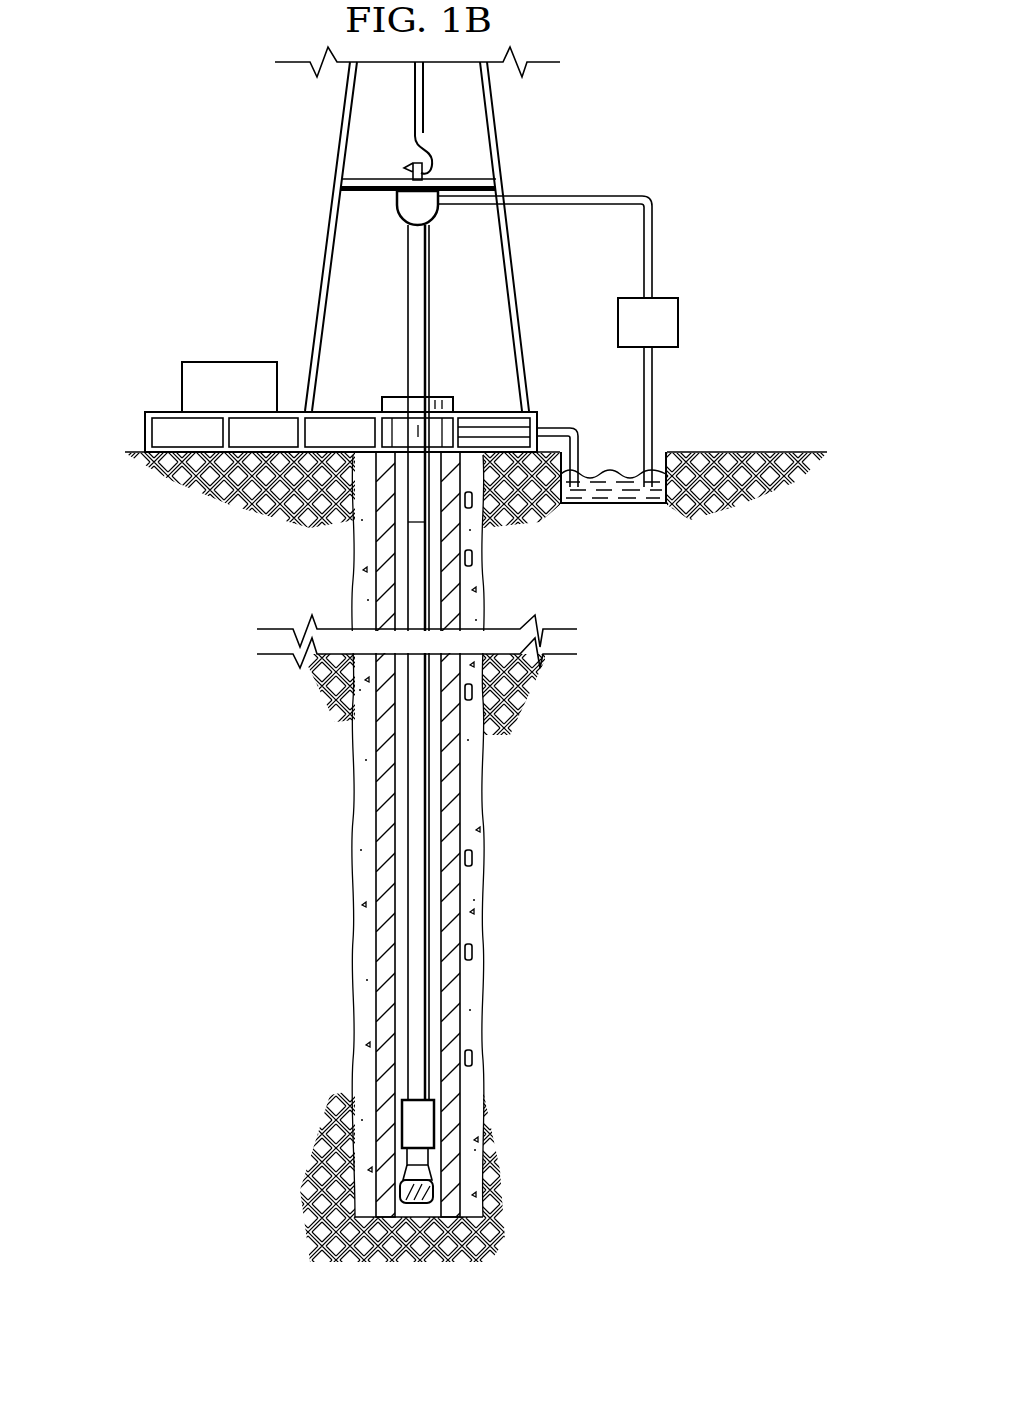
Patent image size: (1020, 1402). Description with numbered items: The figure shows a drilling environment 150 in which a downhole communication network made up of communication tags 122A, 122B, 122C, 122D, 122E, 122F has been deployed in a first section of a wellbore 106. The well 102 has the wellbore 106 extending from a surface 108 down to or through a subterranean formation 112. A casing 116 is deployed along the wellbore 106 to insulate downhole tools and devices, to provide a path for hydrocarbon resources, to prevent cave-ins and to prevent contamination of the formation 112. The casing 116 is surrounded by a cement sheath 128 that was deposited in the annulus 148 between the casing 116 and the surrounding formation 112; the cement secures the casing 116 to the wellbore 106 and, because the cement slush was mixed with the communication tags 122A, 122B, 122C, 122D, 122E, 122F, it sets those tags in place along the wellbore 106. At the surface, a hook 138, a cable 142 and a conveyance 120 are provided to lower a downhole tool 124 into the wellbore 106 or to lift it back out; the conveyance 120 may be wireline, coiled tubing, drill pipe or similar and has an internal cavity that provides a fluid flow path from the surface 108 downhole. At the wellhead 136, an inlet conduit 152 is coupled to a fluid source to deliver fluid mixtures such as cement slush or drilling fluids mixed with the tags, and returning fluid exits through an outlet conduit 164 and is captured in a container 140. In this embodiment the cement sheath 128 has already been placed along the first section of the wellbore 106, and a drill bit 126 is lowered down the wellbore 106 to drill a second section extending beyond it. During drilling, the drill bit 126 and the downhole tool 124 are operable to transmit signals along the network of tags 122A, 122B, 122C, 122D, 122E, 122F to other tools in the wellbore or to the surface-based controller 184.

The well 102 is at (444, 386).
The wellbore 106 is at (476, 812).
The surface 108 is at (762, 452).
The subterranean formation 112 is at (688, 751).
The casing 116 is at (452, 895).
The conveyance 120 is at (408, 815).
The communication tag 122A is at (474, 1058).
The communication tag 122B is at (474, 952).
The communication tag 122C is at (474, 858).
The communication tag 122D is at (473, 692).
The communication tag 122E is at (473, 558).
The communication tag 122F is at (473, 501).
The downhole tool 124 is at (412, 1110).
The drill bit 126 is at (433, 1190).
The cement sheath 128 is at (475, 770).
The wellhead 136 is at (392, 397).
The hook 138 is at (433, 166).
The container 140 is at (607, 498).
The cable 142 is at (413, 124).
The annulus 148 is at (408, 932).
The drilling environment 150 is at (258, 212).
The inlet conduit 152 is at (616, 197).
The outlet conduit 164 is at (553, 427).
The controller 184 is at (226, 362).